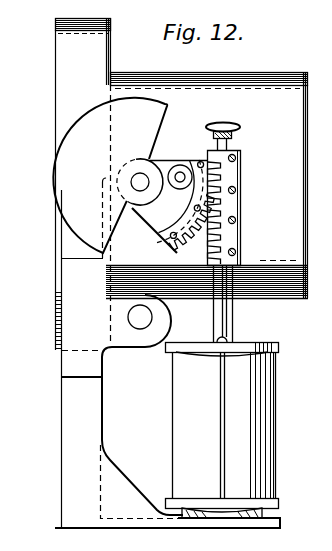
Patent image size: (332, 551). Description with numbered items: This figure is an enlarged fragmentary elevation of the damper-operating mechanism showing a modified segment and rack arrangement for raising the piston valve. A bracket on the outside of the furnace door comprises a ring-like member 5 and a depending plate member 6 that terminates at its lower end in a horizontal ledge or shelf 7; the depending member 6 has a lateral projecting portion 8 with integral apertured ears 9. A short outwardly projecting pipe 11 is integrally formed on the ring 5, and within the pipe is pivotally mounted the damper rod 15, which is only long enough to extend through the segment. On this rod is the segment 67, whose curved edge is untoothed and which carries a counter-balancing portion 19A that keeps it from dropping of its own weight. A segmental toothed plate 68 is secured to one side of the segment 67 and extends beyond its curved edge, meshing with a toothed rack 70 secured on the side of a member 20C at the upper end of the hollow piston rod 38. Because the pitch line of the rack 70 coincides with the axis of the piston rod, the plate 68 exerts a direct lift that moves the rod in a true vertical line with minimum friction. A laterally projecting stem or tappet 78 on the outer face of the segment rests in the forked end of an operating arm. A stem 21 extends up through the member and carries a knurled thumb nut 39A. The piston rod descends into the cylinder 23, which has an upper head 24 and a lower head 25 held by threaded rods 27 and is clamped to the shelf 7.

The ring-like member 5 is at (66, 52).
The pipe 11 is at (264, 86).
The counter-balancing portion 19A is at (95, 121).
The rod 15 is at (135, 182).
The segmental toothed plate 68 is at (193, 162).
The segment 67 is at (151, 230).
The stem or tappet 78 is at (180, 188).
The toothed rack 70 is at (241, 200).
The knurled thumb nut 39A is at (224, 124).
The stem 21 is at (232, 144).
The member 20C is at (210, 262).
The piston rod 38 is at (226, 318).
The apertured ears 9 is at (140, 336).
The lateral projecting portion 8 is at (66, 368).
The depending plate member 6 is at (76, 426).
The ledge or shelf 7 is at (284, 524).
The upper head 24 is at (279, 348).
The cylinder 23 is at (276, 418).
The threaded rods 27 is at (219, 430).
The lower head 25 is at (283, 504).